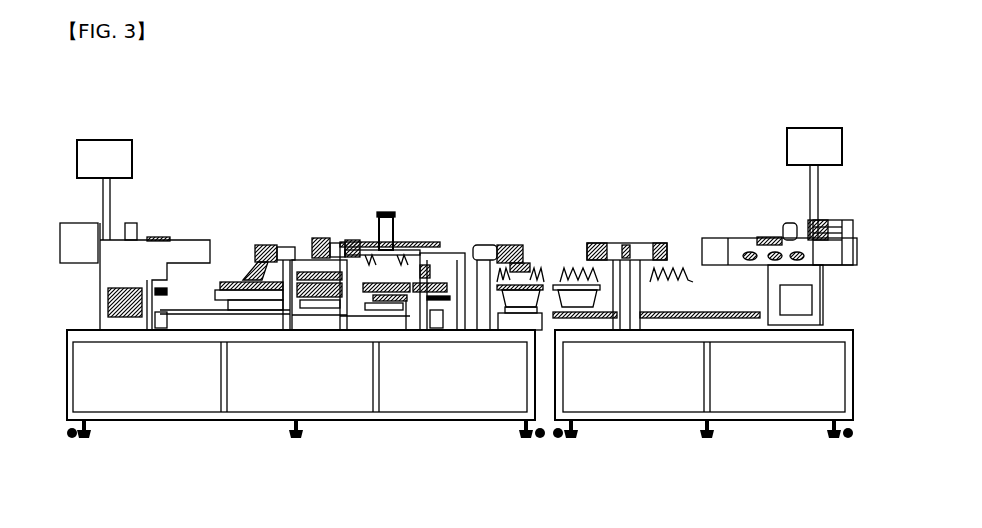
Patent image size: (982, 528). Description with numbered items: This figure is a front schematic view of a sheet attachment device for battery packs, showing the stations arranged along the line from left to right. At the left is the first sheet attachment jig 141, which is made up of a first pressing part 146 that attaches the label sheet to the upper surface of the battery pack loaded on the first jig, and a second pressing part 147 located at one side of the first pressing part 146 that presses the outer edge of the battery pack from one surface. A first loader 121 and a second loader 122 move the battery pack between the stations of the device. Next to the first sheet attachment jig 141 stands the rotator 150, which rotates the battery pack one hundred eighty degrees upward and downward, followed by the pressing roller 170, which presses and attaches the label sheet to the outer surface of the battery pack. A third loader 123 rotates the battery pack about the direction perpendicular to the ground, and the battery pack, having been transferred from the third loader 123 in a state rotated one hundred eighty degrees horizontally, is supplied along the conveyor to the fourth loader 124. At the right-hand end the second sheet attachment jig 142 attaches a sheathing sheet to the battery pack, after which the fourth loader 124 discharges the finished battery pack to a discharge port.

The first loader 121 is at (262, 242).
The second loader 122 is at (610, 242).
The third loader 123 is at (525, 242).
The fourth loader 124 is at (700, 236).
The first sheet attachment jig 141 is at (373, 123).
The second sheet attachment jig 142 is at (782, 223).
The first pressing part 146 is at (175, 230).
The second pressing part 147 is at (366, 229).
The rotator 150 is at (402, 199).
The pressing roller 170 is at (431, 239).